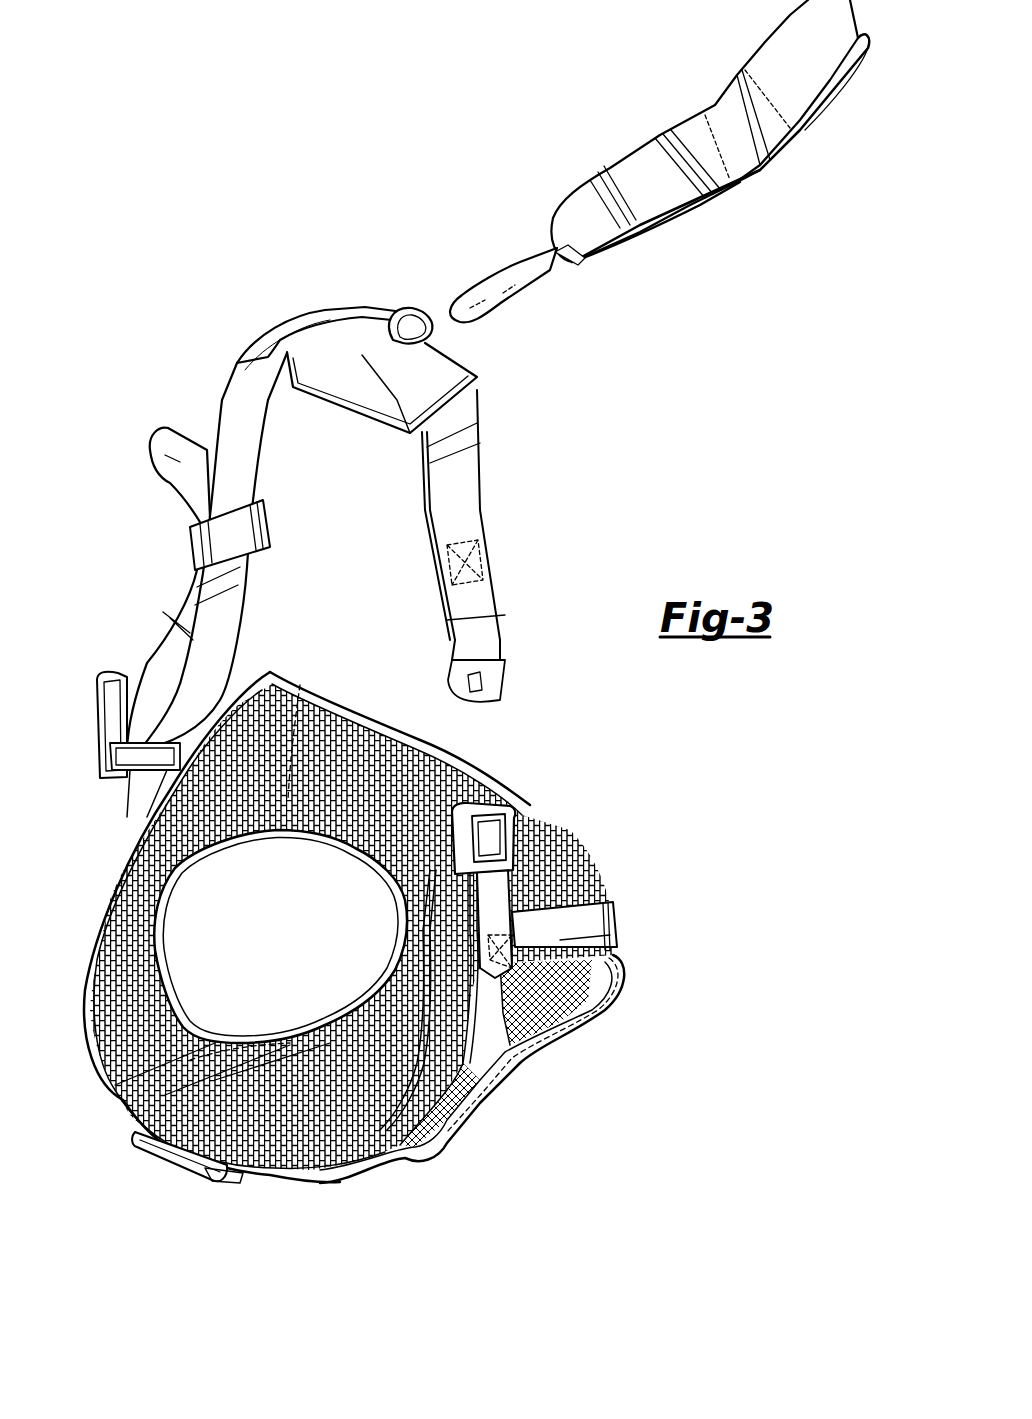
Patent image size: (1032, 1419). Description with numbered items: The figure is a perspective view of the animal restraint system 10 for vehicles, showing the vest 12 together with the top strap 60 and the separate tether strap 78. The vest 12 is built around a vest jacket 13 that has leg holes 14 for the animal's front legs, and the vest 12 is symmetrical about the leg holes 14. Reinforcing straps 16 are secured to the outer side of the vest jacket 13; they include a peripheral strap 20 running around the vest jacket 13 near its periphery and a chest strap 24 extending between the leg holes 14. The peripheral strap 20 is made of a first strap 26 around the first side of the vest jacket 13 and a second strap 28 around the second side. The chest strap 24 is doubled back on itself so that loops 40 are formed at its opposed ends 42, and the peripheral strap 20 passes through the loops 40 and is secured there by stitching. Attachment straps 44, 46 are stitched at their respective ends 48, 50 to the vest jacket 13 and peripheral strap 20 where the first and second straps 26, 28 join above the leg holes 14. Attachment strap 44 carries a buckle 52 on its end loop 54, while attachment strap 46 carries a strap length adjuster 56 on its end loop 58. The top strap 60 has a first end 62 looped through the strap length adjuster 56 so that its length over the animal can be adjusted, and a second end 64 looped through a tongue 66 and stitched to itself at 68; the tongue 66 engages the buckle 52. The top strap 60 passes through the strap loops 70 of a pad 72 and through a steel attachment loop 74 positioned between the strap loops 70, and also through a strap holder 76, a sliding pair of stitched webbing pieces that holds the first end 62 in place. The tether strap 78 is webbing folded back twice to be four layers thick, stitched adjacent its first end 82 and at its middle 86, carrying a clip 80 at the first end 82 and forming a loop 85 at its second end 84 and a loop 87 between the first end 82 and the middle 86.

The animal restraint system 10 is at (745, 455).
The vest 12 is at (630, 825).
The vest jacket 13 is at (128, 1035).
The leg holes 14 is at (185, 965).
The reinforcing straps 16 is at (628, 958).
The peripheral strap 20 is at (500, 1010).
The chest strap 24 is at (242, 1190).
The first strap 26 is at (470, 1085).
The second strap 28 is at (620, 928).
The loops 40 is at (222, 1188).
The opposed ends 42 is at (162, 1165).
The attachment strap 44 is at (505, 912).
The attachment strap 46 is at (118, 805).
The end 48 is at (560, 944).
The end 50 is at (110, 845).
The buckle 52 is at (505, 805).
The end loop 54 is at (503, 855).
The strap length adjuster 56 is at (97, 700).
The end loop 58 is at (110, 795).
The top strap 60 is at (240, 360).
The first end 62 is at (140, 640).
The second end 64 is at (490, 610).
The tongue 66 is at (505, 690).
The securement 68 is at (485, 565).
The strap loops 70 is at (330, 390).
The pad 72 is at (425, 425).
The attachment loop 74 is at (400, 305).
The strap holder 76 is at (268, 500).
The tether strap 78 is at (612, 150).
The clip 80 is at (485, 260).
The first end 82 is at (580, 270).
The second end 84 is at (864, 28).
The loop 85 is at (808, 122).
The middle 86 is at (745, 178).
The loop 87 is at (668, 223).